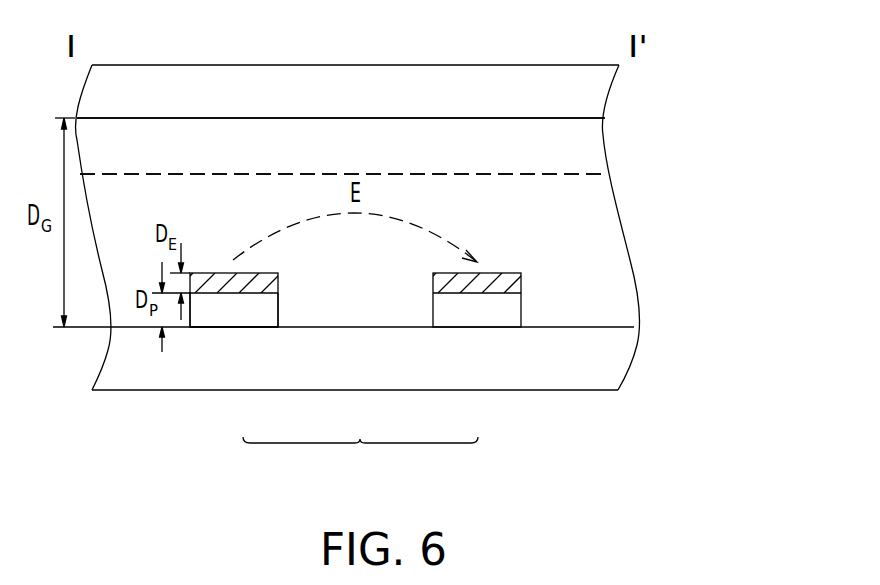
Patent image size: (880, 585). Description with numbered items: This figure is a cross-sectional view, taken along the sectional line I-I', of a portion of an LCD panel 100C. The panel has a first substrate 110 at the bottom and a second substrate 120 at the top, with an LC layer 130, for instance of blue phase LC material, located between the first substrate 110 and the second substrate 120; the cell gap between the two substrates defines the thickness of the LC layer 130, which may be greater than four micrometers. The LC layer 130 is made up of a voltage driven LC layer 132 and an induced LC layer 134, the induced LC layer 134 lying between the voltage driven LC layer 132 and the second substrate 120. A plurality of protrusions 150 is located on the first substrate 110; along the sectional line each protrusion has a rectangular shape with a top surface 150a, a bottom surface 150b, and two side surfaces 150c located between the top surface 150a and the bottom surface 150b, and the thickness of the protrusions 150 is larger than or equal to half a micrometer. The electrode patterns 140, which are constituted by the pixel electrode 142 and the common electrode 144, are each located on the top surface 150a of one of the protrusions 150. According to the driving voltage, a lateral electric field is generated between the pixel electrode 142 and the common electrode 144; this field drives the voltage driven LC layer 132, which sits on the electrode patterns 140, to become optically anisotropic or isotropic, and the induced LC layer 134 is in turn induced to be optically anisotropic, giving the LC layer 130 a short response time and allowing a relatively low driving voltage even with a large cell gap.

The LCD panel 100C is at (620, 496).
The first substrate 110 is at (600, 362).
The second substrate 120 is at (600, 98).
The LC layer 130 is at (698, 137).
The voltage driven LC layer 132 is at (600, 230).
The induced LC layer 134 is at (598, 147).
The electrode patterns 140 is at (360, 460).
The pixel electrode 142 is at (252, 288).
The common electrode 144 is at (447, 292).
The protrusions 150 is at (232, 315).
The top surface 150a is at (237, 291).
The bottom surface 150b is at (268, 330).
The side surfaces 150c is at (278, 303).